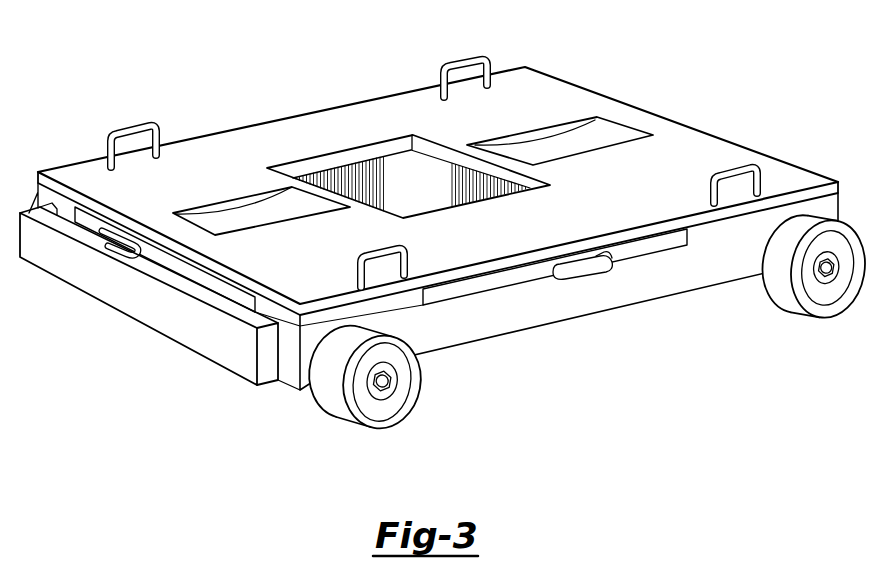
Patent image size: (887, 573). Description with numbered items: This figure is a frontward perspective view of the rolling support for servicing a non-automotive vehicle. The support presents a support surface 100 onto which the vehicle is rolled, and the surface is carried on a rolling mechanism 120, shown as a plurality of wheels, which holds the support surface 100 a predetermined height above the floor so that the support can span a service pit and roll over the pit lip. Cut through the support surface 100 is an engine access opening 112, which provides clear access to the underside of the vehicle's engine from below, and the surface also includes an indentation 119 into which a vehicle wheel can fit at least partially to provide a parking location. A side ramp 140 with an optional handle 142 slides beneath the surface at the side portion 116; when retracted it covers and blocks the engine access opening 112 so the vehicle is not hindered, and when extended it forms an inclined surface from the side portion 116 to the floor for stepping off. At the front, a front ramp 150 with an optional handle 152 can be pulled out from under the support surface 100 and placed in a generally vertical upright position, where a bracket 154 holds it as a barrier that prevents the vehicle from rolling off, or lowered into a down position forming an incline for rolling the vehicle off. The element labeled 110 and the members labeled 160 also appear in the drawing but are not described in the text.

The support surface 100 is at (444, 241).
The top plate 110 is at (438, 191).
The engine access opening 112 is at (408, 159).
The side portion 116 is at (433, 286).
The indentation 119 is at (413, 161).
The rolling mechanism 120 is at (587, 333).
The side ramp 140 is at (540, 279).
The handle 142 is at (623, 319).
The front ramp 150 is at (136, 259).
The handle 152 is at (96, 284).
The bracket 154 is at (149, 310).
The lifting handle 160 is at (400, 170).